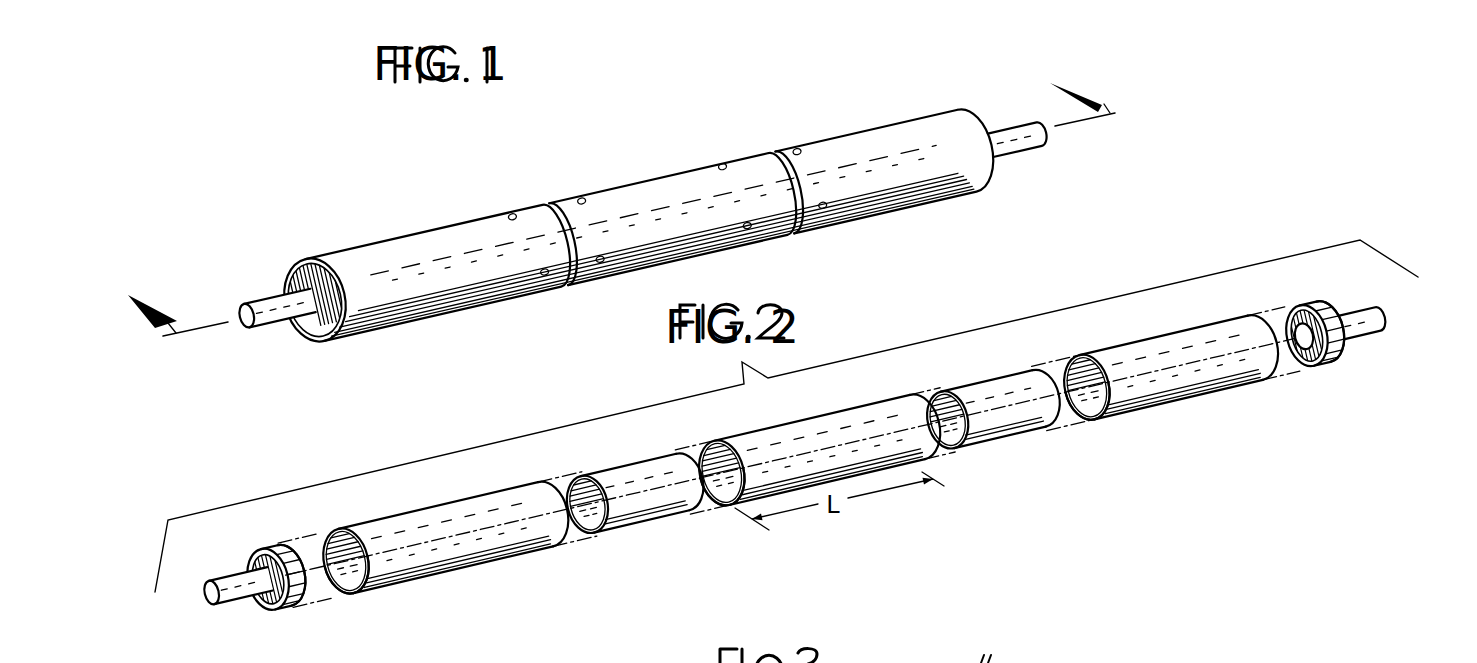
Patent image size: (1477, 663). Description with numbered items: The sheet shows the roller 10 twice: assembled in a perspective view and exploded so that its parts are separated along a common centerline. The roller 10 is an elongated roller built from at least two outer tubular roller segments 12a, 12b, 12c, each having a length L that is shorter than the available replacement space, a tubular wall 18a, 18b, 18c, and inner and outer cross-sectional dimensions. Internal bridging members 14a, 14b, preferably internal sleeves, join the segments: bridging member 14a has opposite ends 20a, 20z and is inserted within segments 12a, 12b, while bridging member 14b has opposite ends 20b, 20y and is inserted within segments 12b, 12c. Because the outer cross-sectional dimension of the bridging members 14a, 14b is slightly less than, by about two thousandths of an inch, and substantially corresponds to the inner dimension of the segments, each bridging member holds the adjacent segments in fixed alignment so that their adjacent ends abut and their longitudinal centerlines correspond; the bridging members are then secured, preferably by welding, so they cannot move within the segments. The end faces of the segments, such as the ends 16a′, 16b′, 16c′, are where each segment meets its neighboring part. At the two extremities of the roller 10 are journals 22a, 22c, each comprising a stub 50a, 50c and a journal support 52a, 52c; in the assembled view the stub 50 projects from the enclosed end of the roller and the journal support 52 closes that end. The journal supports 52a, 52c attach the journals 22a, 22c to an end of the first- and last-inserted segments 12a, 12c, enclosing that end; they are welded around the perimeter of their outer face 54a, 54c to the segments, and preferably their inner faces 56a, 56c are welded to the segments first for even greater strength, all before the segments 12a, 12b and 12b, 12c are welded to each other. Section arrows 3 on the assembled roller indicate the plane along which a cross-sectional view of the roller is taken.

In FIG. 1, the roller 10 is at (898, 108).
In FIG. 2, the roller 10 is at (1190, 308).
In FIG. 1, the outer tubular roller segment 12a is at (389, 258).
In FIG. 2, the outer tubular roller segment 12a is at (421, 520).
In FIG. 1, the outer tubular roller segment 12b is at (637, 197).
In FIG. 2, the outer tubular roller segment 12b is at (814, 432).
In FIG. 1, the outer tubular roller segment 12c is at (823, 145).
In FIG. 2, the outer tubular roller segment 12c is at (1130, 360).
In FIG. 2, the internal bridging member 14a is at (604, 475).
In FIG. 2, the internal bridging member 14b is at (982, 382).
In FIG. 2, the end of outer tubular roller segment 16a′ is at (358, 595).
In FIG. 2, the end of outer tubular roller segment 16b′ is at (704, 445).
In FIG. 2, the end of outer tubular roller segment 16c′ is at (1093, 421).
In FIG. 2, the tubular wall 18a is at (345, 528).
In FIG. 2, the tubular wall 18b is at (717, 439).
In FIG. 2, the tubular wall 18c is at (1081, 350).
In FIG. 2, the end of internal bridging member 20a is at (594, 533).
In FIG. 2, the end of internal bridging member 20z is at (692, 511).
In FIG. 2, the end of internal bridging member 20b is at (951, 451).
In FIG. 2, the end of internal bridging member 20y is at (1048, 430).
In FIG. 2, the journal 22a is at (236, 545).
In FIG. 2, the journal 22c is at (1314, 290).
In FIG. 1, the stub 50 is at (263, 323).
In FIG. 2, the stub 50a is at (219, 595).
In FIG. 2, the stub 50c is at (1375, 310).
In FIG. 1, the journal support 52 is at (323, 323).
In FIG. 2, the journal support 52a is at (281, 606).
In FIG. 2, the journal support 52c is at (1330, 366).
In FIG. 2, the outer face 54a is at (262, 610).
In FIG. 2, the outer face 54c is at (1350, 348).
In FIG. 2, the inner face 56a is at (296, 545).
In FIG. 2, the inner face 56c is at (1306, 360).
In FIG. 1, the section line 3- 3 is at (618, 193).